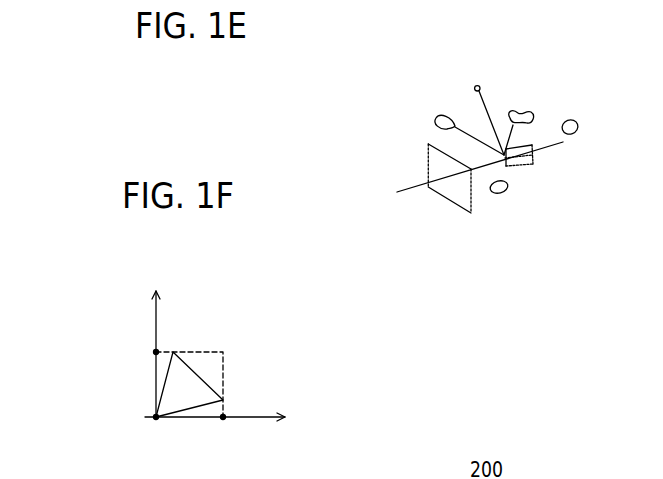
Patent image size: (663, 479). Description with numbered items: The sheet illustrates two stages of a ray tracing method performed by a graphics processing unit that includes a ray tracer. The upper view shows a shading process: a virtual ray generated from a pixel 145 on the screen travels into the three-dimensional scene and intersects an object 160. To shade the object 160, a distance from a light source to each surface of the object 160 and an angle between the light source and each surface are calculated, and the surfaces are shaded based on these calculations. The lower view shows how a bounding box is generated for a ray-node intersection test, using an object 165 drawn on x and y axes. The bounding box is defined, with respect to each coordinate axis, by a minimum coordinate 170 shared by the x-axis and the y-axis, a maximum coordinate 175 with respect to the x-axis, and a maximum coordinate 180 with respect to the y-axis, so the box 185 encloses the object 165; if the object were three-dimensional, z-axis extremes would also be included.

In FIG. 1E, the pixel 145 is at (450, 177).
In FIG. 1E, the object 160 is at (533, 165).
In FIG. 1F, the object 165 is at (195, 377).
In FIG. 1F, the minimum coordinate 170 is at (155, 422).
In FIG. 1F, the maximum coordinate 175 is at (223, 422).
In FIG. 1F, the maximum coordinate 180 is at (156, 352).
In FIG. 1F, the bounding square 185 is at (222, 375).